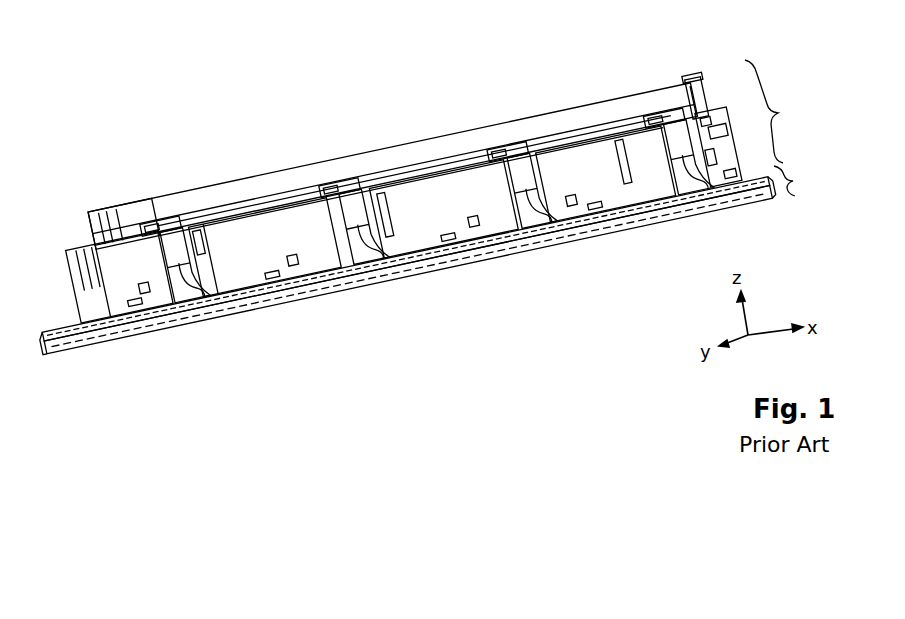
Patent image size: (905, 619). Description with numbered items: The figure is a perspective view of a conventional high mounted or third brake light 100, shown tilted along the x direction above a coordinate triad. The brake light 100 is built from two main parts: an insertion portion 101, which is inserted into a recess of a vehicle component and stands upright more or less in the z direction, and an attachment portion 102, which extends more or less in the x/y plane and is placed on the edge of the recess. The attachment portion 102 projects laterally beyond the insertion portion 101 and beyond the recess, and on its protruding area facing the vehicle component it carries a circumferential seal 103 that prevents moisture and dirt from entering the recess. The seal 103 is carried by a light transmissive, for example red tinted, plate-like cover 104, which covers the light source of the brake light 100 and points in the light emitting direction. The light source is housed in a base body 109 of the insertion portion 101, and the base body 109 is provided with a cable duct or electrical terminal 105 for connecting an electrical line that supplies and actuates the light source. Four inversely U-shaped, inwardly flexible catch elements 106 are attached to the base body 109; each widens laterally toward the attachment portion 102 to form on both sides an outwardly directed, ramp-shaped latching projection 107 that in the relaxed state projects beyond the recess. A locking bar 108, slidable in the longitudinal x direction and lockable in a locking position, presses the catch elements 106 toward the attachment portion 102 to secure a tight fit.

The brake light 100 is at (204, 97).
The insertion portion 101 is at (780, 111).
The attachment portion 102 is at (805, 181).
The circumferential seal 103 is at (62, 332).
The cover 104 is at (258, 309).
The electrical terminal 105 is at (706, 78).
The catch element 106 is at (172, 238).
The latching projection 107 is at (190, 288).
The locking bar 108 is at (266, 181).
The base body 109 is at (125, 298).